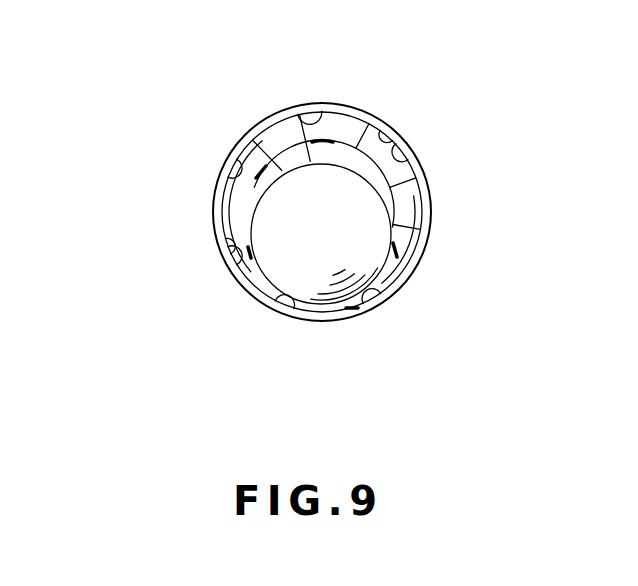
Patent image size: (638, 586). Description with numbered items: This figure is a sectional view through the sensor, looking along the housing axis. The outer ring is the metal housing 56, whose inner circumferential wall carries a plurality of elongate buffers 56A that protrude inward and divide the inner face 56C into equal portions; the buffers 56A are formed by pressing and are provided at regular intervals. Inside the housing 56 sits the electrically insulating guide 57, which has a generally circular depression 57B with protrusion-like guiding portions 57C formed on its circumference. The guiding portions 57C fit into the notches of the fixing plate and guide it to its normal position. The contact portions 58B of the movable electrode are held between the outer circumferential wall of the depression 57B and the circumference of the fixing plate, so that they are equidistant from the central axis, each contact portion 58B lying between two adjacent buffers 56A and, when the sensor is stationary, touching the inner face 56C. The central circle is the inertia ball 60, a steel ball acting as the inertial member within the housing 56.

The metal housing 56 is at (425, 176).
The buffers 56A is at (220, 253).
The inner face 56C is at (303, 106).
The guide 57 is at (341, 132).
The depression 57B is at (368, 128).
The guiding portions 57C is at (275, 163).
The contact portions 58B is at (258, 184).
The inertia ball 60 is at (298, 255).